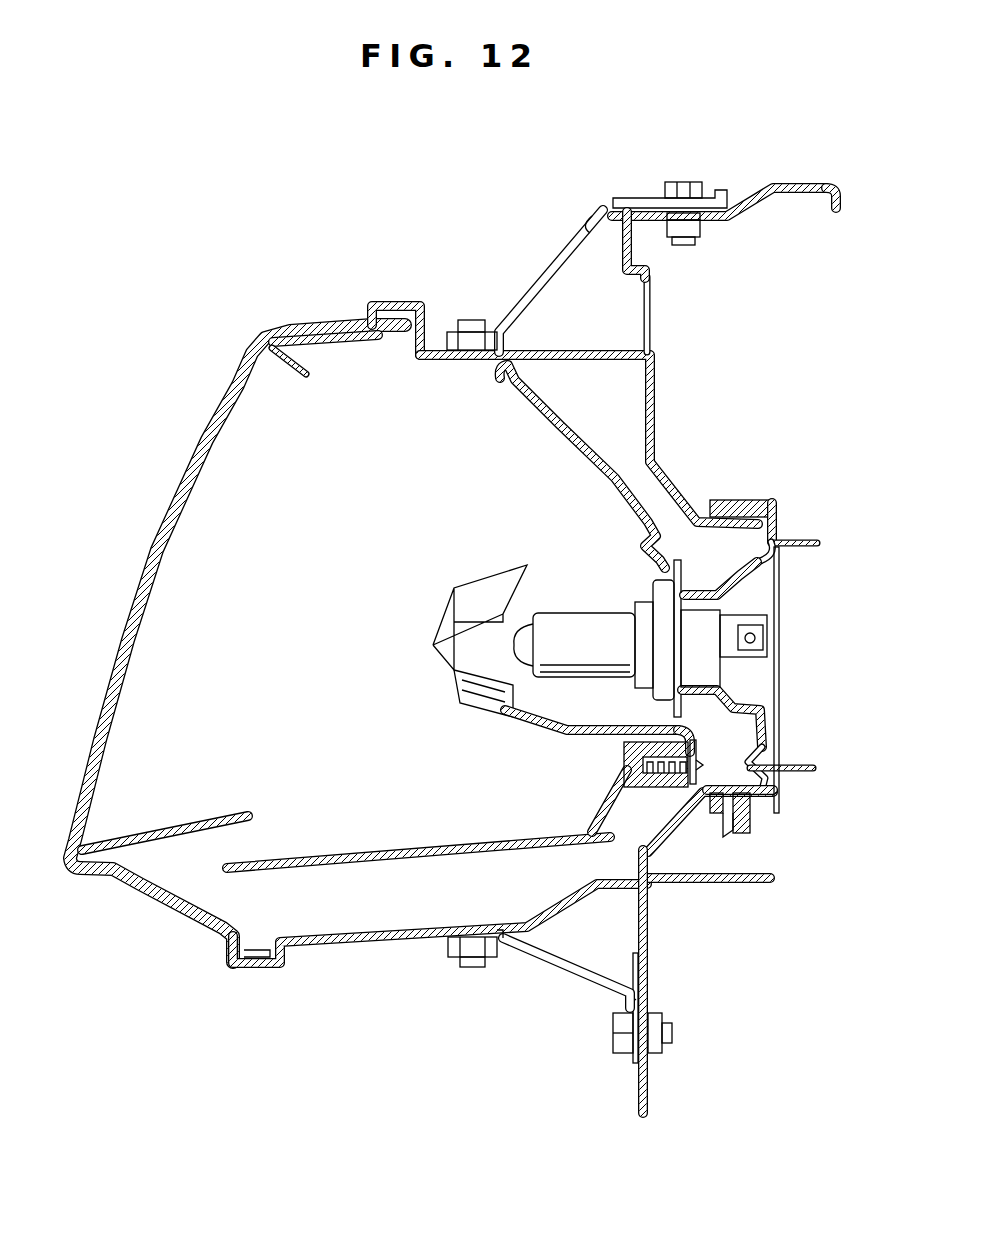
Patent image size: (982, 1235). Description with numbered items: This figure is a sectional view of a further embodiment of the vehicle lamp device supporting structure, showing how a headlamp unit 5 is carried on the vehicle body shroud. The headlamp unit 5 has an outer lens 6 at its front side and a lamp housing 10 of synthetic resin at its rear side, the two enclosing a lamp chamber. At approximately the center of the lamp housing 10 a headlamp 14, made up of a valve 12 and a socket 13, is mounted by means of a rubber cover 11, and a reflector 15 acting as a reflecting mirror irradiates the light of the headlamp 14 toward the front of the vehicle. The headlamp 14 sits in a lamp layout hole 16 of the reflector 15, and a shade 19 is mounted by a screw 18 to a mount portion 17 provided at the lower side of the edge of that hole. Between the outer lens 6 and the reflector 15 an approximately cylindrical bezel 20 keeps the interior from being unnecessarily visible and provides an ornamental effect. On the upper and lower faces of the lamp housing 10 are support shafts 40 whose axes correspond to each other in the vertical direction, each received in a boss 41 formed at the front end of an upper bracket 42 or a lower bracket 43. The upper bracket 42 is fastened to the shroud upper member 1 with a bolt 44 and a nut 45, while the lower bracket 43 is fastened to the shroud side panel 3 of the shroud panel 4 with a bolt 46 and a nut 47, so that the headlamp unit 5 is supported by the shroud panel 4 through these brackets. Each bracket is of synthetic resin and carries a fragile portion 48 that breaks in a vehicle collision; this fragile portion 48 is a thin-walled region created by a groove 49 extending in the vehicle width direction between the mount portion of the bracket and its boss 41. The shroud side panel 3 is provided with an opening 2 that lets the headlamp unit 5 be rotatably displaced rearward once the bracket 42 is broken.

The shroud upper member 1 is at (827, 188).
The opening 2 is at (652, 306).
The shroud side panel 3 is at (650, 1082).
The shroud panel 4 is at (793, 178).
The headlamp unit 5 is at (250, 322).
The outer lens 6 is at (150, 552).
The lamp housing 10 is at (605, 352).
The rubber cover 11 is at (748, 500).
The valve 12 is at (584, 624).
The socket 13 is at (697, 612).
The headlamp 14 is at (548, 692).
The reflector 15 is at (560, 427).
The lamp layout hole 16 is at (658, 710).
The mount portion 17 is at (657, 777).
The screw 18 is at (703, 765).
The shade 19 is at (432, 608).
The bezel 20 is at (225, 815).
The support shaft 40 is at (475, 325).
The boss 41 is at (445, 338).
The upper bracket 42 is at (553, 263).
The lower bracket 43 is at (560, 972).
The bolt 44 is at (685, 188).
The nut 45 is at (703, 228).
The bolt 46 is at (625, 1050).
The nut 47 is at (655, 1010).
The fragile portion 48 is at (613, 207).
The groove 49 is at (588, 228).